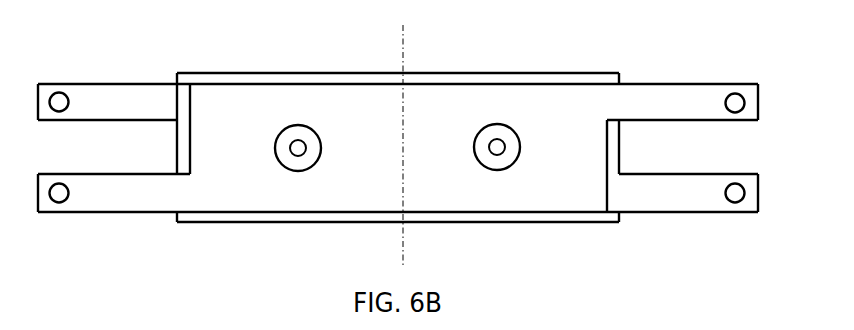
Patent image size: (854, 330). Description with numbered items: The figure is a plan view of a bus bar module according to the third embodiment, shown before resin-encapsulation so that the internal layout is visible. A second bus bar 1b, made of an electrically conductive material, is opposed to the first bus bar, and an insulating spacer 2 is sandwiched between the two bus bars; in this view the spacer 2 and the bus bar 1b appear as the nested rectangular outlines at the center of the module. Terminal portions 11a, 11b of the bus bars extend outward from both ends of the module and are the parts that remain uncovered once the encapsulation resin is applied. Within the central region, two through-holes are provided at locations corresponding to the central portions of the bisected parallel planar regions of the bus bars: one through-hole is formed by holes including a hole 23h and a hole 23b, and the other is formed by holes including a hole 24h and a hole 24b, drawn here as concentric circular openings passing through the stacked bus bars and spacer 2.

The spacer 2 is at (342, 78).
The second bus bar 1b is at (497, 102).
The terminal portion 11a is at (107, 95).
The terminal portion 11b is at (98, 203).
The hole 23h is at (291, 153).
The hole 23b is at (310, 168).
The hole 24h is at (491, 152).
The hole 24b is at (510, 165).